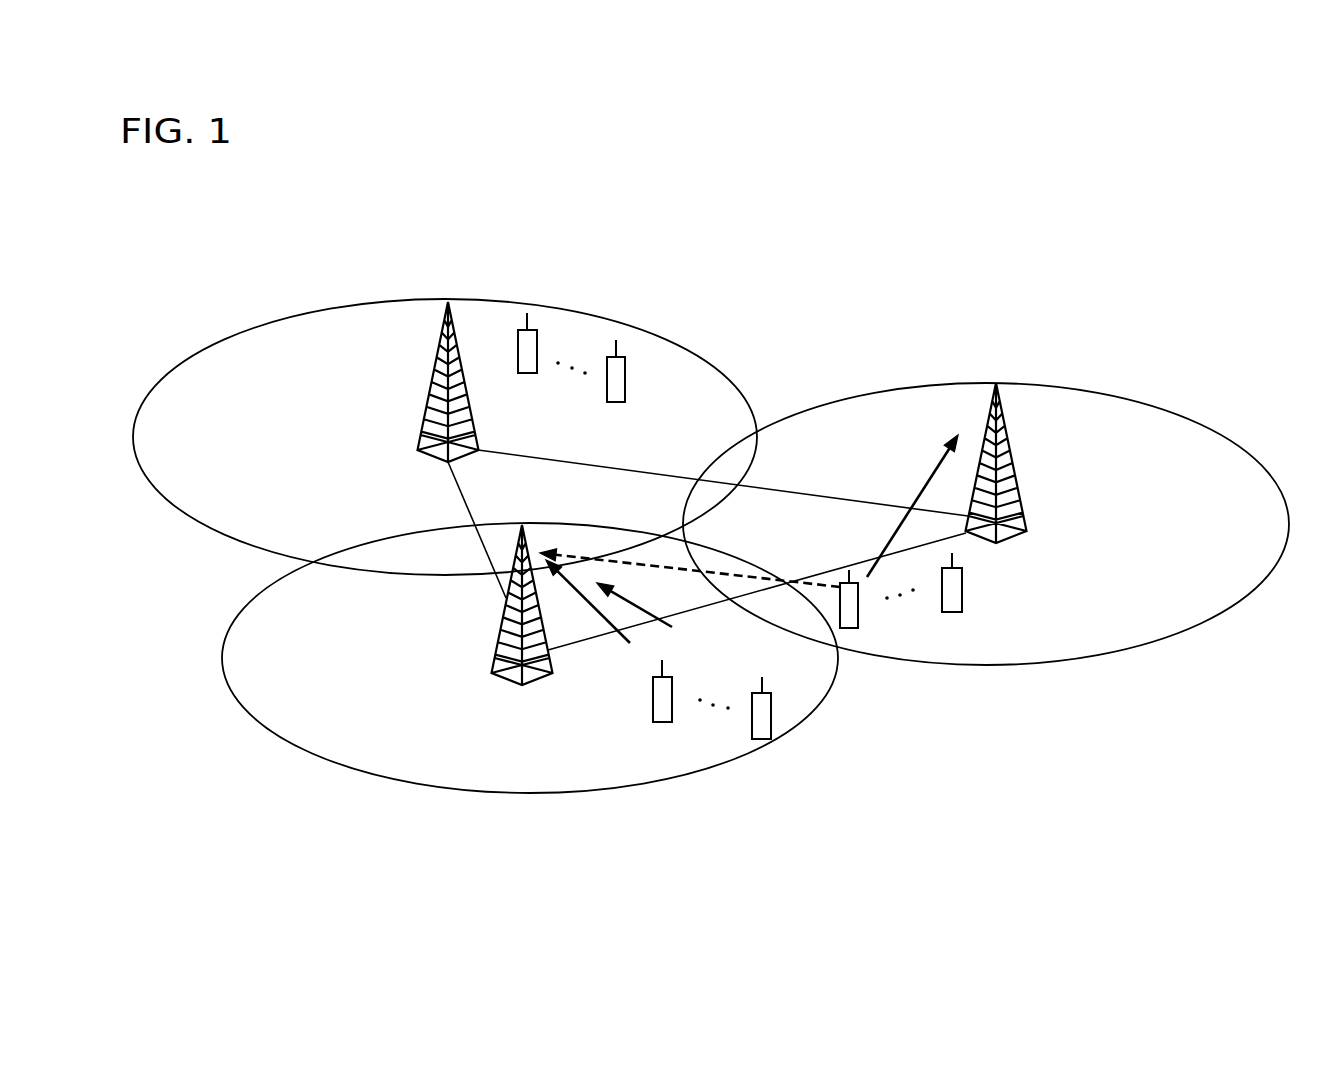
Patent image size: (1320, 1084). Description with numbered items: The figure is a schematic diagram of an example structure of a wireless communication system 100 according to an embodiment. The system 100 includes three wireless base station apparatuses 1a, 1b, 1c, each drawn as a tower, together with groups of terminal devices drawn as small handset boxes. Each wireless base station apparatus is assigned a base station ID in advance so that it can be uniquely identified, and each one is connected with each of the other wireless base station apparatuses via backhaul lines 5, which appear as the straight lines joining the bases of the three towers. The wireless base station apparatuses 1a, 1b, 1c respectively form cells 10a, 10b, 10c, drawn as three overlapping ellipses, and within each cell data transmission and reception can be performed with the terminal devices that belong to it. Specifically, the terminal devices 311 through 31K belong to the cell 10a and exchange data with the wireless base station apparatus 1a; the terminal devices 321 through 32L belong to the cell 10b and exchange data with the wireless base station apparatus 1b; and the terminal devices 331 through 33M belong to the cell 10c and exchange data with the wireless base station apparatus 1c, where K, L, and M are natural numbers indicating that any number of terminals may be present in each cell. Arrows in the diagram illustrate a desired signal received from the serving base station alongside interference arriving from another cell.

The wireless communication system 100 is at (1048, 227).
The cell 10a is at (493, 795).
The cell 10b is at (1107, 655).
The cell 10c is at (405, 300).
The wireless base station apparatus 1a is at (495, 653).
The wireless base station apparatus 1b is at (1017, 483).
The wireless base station apparatus 1c is at (425, 415).
The backhaul line 5 is at (465, 500).
The terminal device 311 is at (650, 699).
The terminal device 31K is at (762, 739).
The terminal device 321 is at (851, 628).
The terminal device 32L is at (952, 612).
The terminal device 331 is at (527, 373).
The terminal device 33M is at (625, 380).